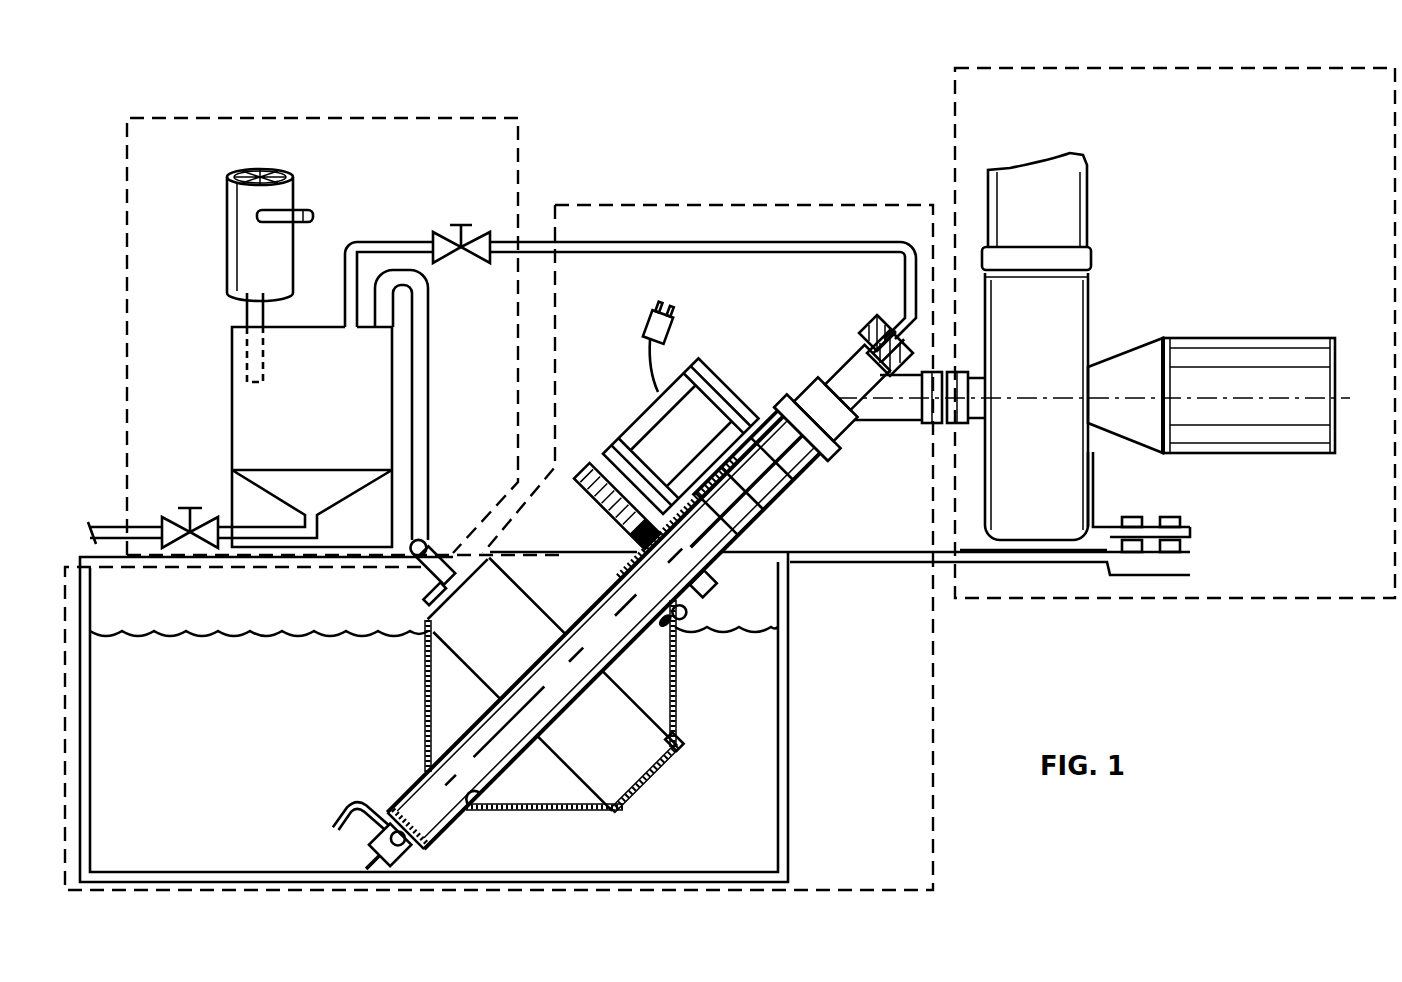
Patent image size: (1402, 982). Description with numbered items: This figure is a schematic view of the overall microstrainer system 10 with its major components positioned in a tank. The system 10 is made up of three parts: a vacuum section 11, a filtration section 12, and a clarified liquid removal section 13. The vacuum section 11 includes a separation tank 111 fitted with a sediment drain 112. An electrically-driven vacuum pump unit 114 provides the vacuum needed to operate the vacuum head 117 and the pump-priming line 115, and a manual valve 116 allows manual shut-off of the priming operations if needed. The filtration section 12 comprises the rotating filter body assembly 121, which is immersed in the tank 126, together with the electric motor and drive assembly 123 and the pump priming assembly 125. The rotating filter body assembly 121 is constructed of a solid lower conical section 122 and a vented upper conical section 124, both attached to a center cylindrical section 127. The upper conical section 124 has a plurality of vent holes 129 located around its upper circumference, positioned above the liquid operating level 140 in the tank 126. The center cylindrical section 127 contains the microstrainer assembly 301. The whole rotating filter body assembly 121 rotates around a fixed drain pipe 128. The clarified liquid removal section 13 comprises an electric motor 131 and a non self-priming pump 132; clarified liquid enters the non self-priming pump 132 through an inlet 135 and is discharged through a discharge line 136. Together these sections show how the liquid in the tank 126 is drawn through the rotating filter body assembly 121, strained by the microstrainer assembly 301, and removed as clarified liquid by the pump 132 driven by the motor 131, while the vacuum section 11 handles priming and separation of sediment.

The microstrainer system 10 is at (668, 108).
The vacuum section 11 is at (185, 118).
The filtration section 12 is at (680, 203).
The clarified liquid removal section 13 is at (1152, 68).
The separation tank 111 is at (388, 428).
The sediment drain 112 is at (188, 507).
The vacuum pump unit 114 is at (293, 197).
The pump-priming line 115 is at (512, 242).
The manual valve 116 is at (460, 220).
The vacuum head 117 is at (490, 545).
The rotating filter body assembly 121 is at (423, 683).
The lower conical section 122 is at (525, 812).
The electric motor and drive assembly 123 is at (702, 357).
The upper conical section 124 is at (590, 663).
The pump priming assembly 125 is at (868, 327).
The tank 126 is at (790, 757).
The center cylindrical section 127 is at (645, 790).
The fixed drain pipe 128 is at (590, 810).
The vent holes 129 is at (678, 601).
The electric motor 131 is at (1225, 340).
The non self-priming pump 132 is at (1042, 545).
The inlet 135 is at (983, 437).
The discharge line 136 is at (1088, 200).
The liquid operating level 140 is at (742, 628).
The microstrainer assembly 301 is at (670, 765).